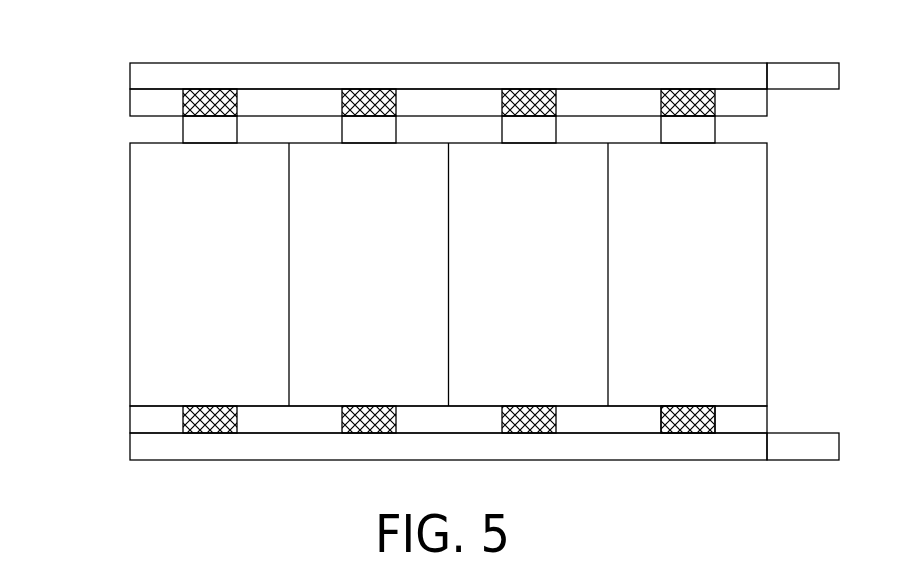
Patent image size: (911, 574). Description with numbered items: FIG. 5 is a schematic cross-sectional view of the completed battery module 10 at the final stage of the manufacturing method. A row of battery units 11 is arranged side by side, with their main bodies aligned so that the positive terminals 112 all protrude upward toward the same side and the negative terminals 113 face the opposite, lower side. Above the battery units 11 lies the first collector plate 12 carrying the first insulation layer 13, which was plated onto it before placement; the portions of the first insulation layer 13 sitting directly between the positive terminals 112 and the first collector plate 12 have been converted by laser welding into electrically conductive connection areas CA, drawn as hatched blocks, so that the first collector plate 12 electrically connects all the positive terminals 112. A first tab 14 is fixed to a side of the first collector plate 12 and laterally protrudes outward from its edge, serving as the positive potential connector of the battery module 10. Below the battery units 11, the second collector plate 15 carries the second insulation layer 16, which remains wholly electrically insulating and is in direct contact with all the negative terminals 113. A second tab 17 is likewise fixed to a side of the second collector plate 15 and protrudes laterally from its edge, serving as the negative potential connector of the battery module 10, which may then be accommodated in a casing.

The battery module 10 is at (52, 38).
The battery unit 11 is at (104, 283).
The first collector plate 12 is at (142, 72).
The first insulation layer 13 is at (142, 99).
The first tab 14 is at (828, 76).
The second collector plate 15 is at (142, 451).
The second insulation layer 16 is at (142, 424).
The second tab 17 is at (828, 449).
The positive terminal 112 is at (703, 130).
The negative terminal 113 is at (687, 433).
The connection area CA is at (703, 422).